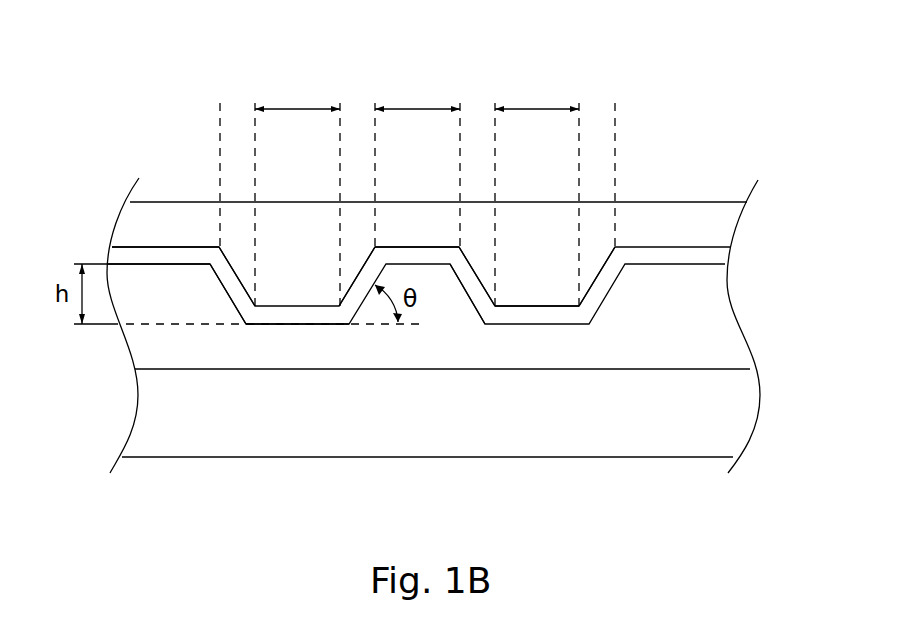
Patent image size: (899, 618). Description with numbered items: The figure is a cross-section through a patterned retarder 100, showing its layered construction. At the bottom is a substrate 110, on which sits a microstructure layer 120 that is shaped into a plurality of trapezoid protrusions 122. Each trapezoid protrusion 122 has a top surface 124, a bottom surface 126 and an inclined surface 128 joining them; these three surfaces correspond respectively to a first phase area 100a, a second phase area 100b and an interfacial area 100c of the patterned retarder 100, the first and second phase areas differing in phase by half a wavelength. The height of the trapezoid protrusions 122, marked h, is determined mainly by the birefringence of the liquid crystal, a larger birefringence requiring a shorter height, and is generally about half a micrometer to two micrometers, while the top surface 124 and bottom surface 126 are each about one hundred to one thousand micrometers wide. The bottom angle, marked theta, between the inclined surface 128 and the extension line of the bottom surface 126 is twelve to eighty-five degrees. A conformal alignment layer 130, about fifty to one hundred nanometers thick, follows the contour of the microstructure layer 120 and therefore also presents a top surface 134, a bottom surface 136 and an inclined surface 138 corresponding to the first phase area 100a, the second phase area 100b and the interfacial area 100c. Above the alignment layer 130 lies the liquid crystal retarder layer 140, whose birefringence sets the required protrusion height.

The patterned retarder 100 is at (685, 540).
The first phase area 100a is at (417, 94).
The second phase area 100b is at (417, 94).
The interfacial area 100c is at (356, 100).
The substrate 110 is at (708, 410).
The microstructure layer 120 is at (708, 317).
The trapezoid protrusion 122 is at (165, 233).
The top surface 124 is at (135, 262).
The bottom surface 126 is at (298, 323).
The inclined surface 128 is at (225, 291).
The conformal alignment layer 130 is at (708, 259).
The top surface of alignment layer 134 is at (412, 247).
The bottom surface of alignment layer 136 is at (530, 306).
The inclined surface of alignment layer 138 is at (478, 279).
The liquid crystal retarder layer 140 is at (708, 233).